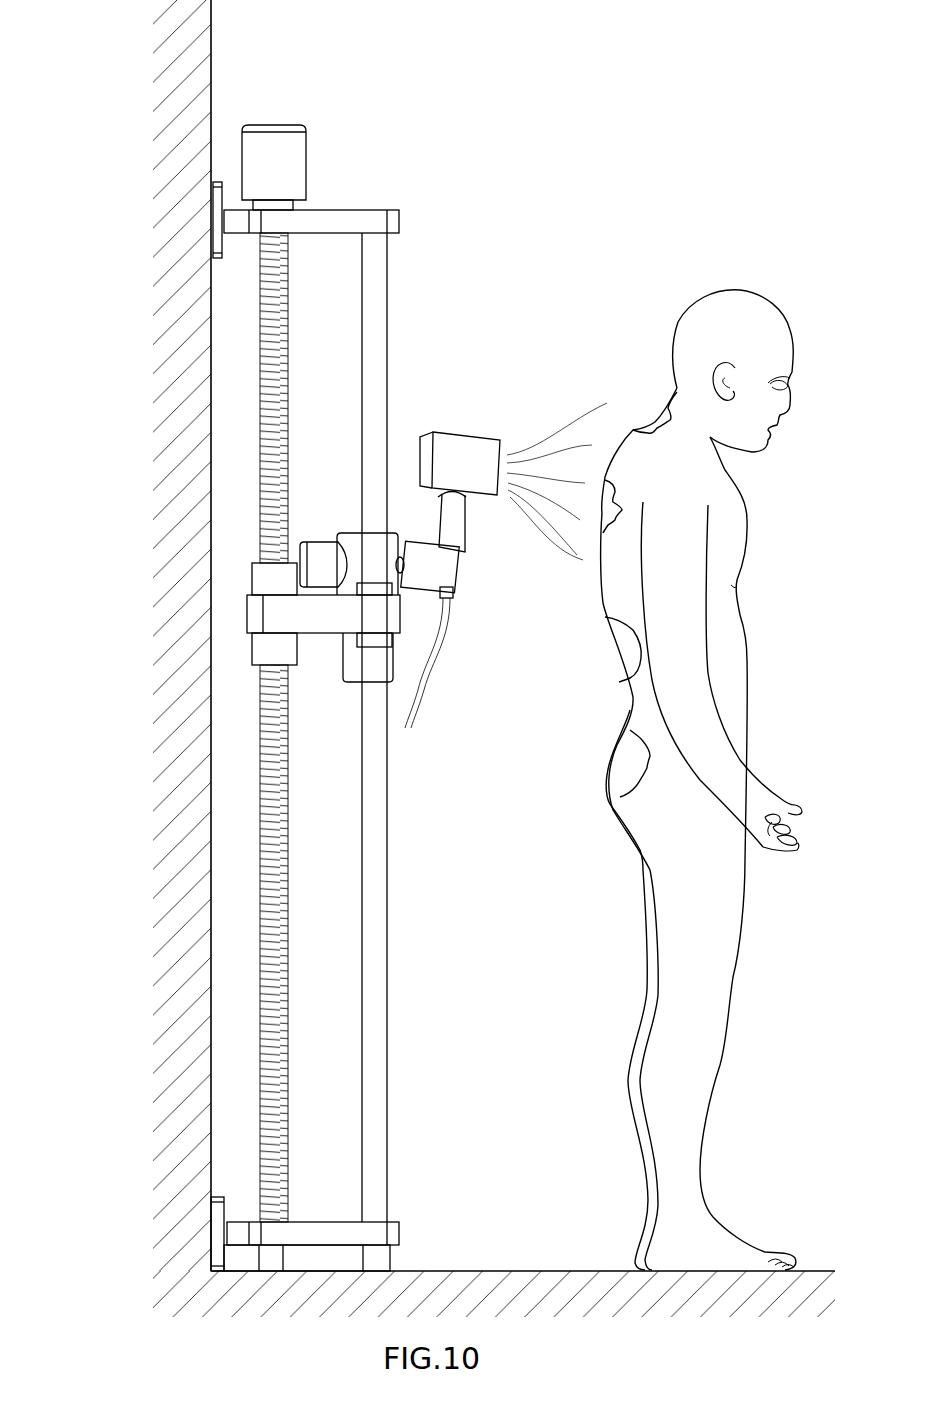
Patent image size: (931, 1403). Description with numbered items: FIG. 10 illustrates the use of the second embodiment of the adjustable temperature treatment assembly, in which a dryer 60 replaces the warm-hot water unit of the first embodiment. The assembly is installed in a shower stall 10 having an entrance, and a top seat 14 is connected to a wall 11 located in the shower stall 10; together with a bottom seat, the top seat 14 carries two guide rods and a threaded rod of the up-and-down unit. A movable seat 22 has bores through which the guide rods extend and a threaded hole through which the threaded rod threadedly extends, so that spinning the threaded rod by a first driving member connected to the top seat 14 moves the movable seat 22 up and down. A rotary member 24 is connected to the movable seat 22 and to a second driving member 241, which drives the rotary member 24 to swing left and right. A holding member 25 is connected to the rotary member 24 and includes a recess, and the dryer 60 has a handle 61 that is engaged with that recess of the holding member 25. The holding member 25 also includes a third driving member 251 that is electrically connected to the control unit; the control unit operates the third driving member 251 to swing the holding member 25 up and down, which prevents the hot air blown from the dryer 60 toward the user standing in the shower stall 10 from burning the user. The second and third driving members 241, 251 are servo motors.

The shower stall 10 is at (133, 635).
The wall 11 is at (212, 388).
The top seat 14 is at (240, 227).
The movable seat 22 is at (255, 613).
The rotary member 24 is at (347, 533).
The second driving member 241 is at (350, 653).
The third driving member 251 is at (323, 548).
The holding member 25 is at (442, 570).
The dryer 60 is at (467, 432).
The handle 61 is at (460, 525).